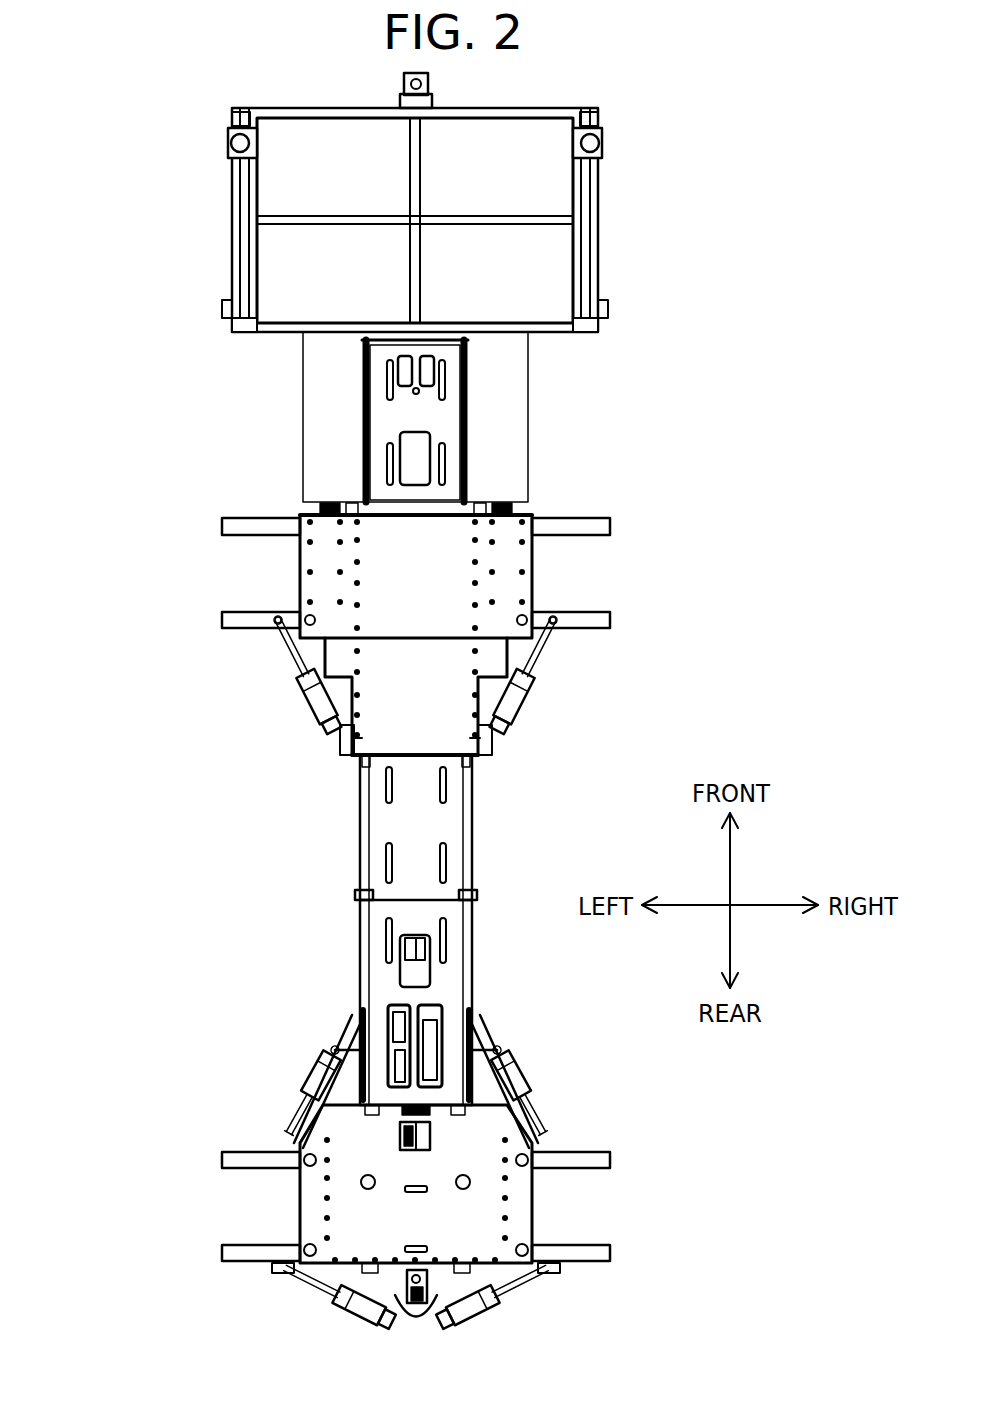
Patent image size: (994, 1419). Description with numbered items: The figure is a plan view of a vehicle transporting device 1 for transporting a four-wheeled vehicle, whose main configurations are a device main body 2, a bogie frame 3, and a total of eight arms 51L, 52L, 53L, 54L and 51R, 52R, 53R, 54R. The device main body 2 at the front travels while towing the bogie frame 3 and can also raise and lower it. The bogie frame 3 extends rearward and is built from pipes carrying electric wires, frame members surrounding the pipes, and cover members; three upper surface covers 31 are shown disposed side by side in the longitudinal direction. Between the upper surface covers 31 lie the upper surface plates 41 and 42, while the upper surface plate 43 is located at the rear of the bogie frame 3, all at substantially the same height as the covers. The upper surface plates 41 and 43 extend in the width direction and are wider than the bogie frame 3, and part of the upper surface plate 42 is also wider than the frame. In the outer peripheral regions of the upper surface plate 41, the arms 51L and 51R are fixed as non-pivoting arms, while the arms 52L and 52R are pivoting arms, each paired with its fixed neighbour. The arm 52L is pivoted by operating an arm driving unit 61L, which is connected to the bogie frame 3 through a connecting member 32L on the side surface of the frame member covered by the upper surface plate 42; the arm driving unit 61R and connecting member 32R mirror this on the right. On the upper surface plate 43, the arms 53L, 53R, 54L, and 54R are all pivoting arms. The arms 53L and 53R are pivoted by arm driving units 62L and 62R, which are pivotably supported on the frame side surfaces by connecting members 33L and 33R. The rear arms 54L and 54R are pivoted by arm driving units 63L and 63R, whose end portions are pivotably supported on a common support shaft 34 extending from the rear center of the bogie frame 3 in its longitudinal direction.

The vehicle transporting device 1 is at (148, 240).
The device main body 2 is at (275, 107).
The bogie frame 3 is at (352, 843).
The upper surface cover 31 is at (382, 412).
The connecting member 32L is at (336, 740).
The connecting member 32R is at (492, 740).
The connecting member 33L is at (340, 1027).
The connecting member 33R is at (478, 1020).
The support shaft 34 is at (405, 1288).
The upper surface plate 41 is at (497, 498).
The upper surface plate 42 is at (433, 742).
The upper surface plate 43 is at (513, 1198).
The arm 51L is at (217, 521).
The arm 51R is at (616, 521).
The arm 52L is at (217, 611).
The arm 52R is at (616, 611).
The arm 53L is at (217, 1152).
The arm 53R is at (616, 1152).
The arm 54L is at (217, 1243).
The arm 54R is at (616, 1243).
The arm driving unit 61L is at (300, 690).
The arm driving unit 61R is at (532, 690).
The arm driving unit 62L is at (302, 1080).
The arm driving unit 62R is at (530, 1080).
The arm driving unit 63L is at (337, 1302).
The arm driving unit 63R is at (493, 1302).